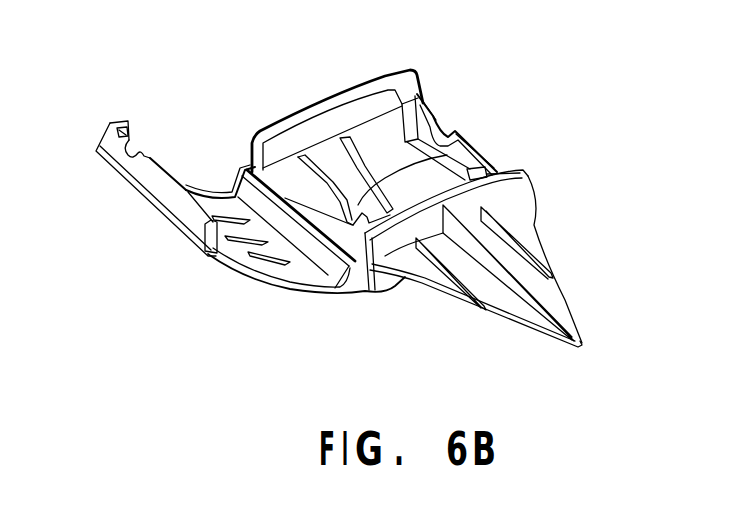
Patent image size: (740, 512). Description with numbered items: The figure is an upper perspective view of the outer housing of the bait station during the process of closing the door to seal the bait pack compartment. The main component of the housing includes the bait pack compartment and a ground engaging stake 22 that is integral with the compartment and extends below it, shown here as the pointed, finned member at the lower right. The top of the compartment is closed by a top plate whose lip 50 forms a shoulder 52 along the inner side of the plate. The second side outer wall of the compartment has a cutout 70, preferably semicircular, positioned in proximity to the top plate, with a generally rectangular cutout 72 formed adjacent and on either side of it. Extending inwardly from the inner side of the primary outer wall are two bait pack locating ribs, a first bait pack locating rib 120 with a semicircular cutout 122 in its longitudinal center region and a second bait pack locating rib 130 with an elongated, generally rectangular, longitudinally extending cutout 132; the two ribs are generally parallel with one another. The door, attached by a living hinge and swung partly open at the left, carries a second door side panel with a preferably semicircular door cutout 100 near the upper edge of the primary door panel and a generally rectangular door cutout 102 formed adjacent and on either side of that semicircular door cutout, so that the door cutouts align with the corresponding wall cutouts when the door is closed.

The ground engaging stake 22 is at (508, 307).
The lip 50 is at (340, 90).
The shoulder 52 is at (397, 88).
The cutout 70 is at (446, 128).
The rectangular cutout 72 is at (440, 112).
The door cutout 100 is at (126, 153).
The rectangular door cutout 102 is at (150, 158).
The first bait pack locating rib 120 is at (317, 160).
The semicircular cutout 122 is at (325, 235).
The second bait pack locating rib 130 is at (363, 138).
The rectangular cutout 132 is at (400, 161).